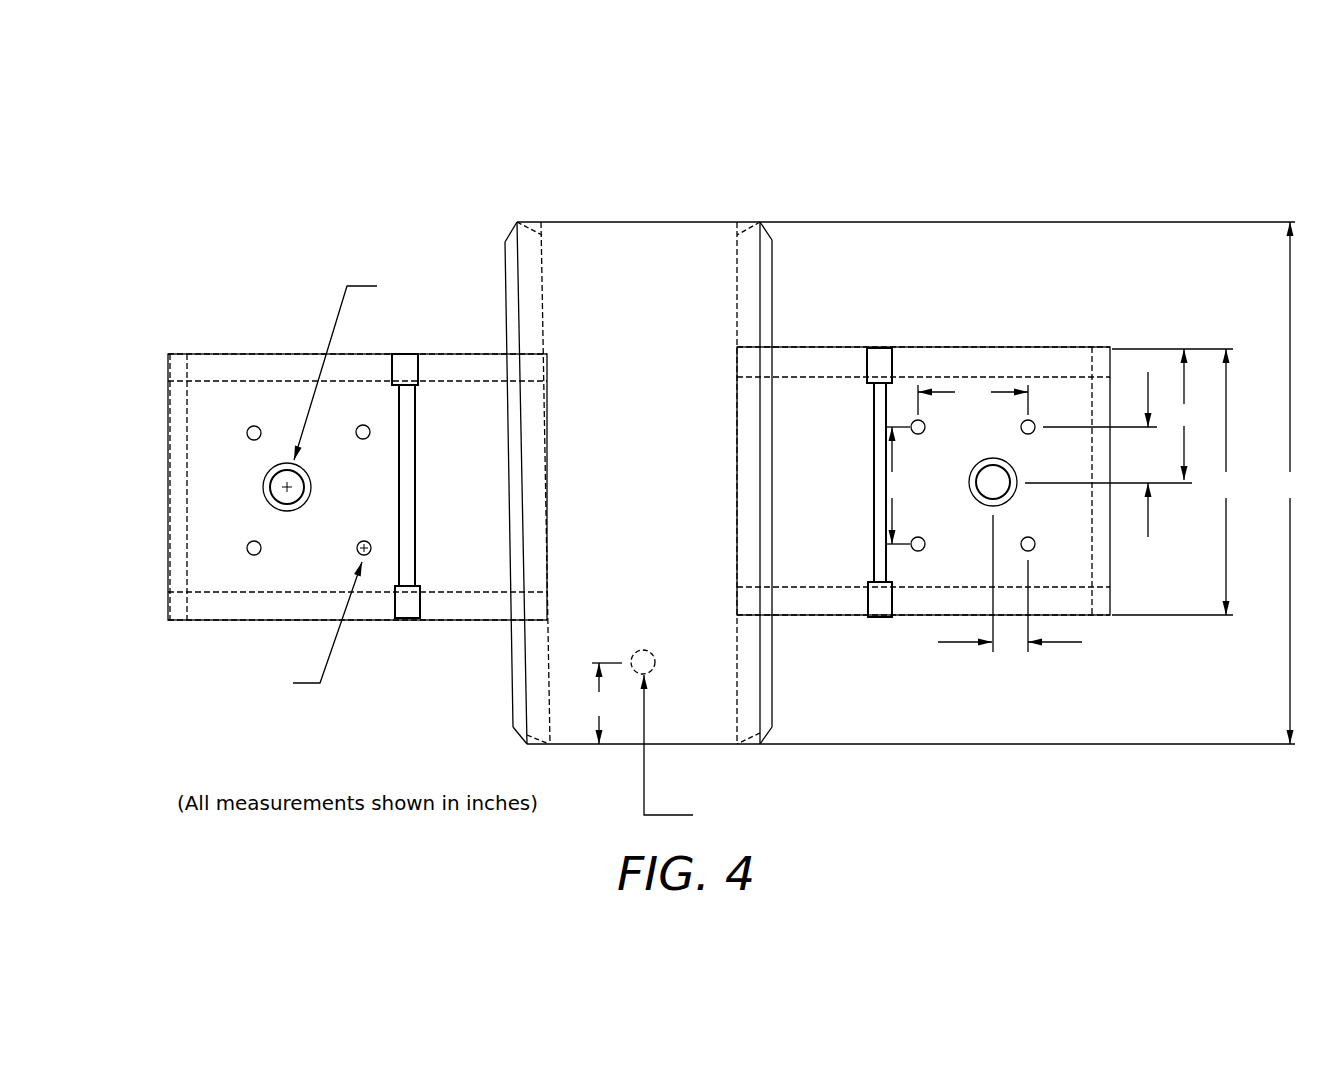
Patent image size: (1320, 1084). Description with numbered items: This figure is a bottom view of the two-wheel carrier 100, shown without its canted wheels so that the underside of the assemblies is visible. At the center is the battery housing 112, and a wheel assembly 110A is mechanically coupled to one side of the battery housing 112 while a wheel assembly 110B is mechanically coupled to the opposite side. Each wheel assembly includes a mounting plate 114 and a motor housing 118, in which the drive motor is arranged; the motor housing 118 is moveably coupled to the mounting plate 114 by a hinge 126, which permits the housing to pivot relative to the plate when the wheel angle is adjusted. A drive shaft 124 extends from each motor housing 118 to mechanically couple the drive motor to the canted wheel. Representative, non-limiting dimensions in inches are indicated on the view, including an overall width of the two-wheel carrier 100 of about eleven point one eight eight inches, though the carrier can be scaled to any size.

The two-wheel carrier 100 is at (430, 145).
The wheel assembly 110A is at (1097, 243).
The wheel assembly 110B is at (262, 267).
The battery housing 112 is at (703, 503).
The mounting plate 114 is at (477, 621).
The motor housing 118 is at (303, 353).
The drive shaft 124 is at (283, 504).
The hinge 126 is at (405, 352).